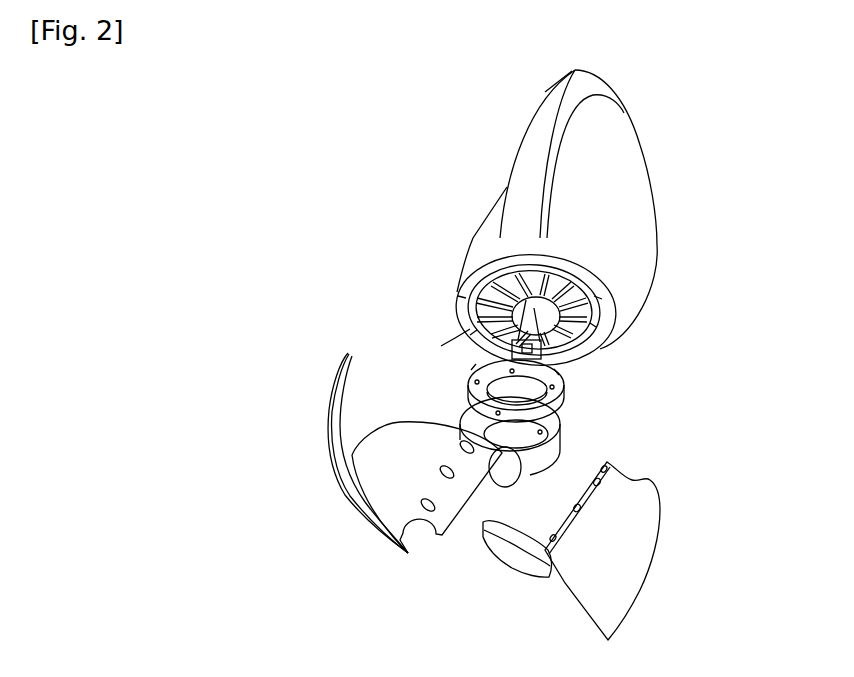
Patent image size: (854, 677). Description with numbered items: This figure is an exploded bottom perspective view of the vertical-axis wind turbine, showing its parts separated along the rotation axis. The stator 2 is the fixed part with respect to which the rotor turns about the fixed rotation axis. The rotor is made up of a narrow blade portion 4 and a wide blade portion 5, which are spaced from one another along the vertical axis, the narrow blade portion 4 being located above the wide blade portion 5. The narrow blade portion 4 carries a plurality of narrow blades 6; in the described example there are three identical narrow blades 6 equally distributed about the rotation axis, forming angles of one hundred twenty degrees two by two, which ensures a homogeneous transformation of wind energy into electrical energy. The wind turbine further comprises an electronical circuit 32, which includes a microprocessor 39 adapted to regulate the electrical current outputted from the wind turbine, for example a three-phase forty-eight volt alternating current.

The stator 2 is at (557, 460).
The narrow blade portion 4 is at (572, 221).
The wide blade portion 5 is at (694, 549).
The narrow blades 6 is at (652, 238).
The electronical circuit 32 is at (548, 362).
The microprocessor 39 is at (468, 334).